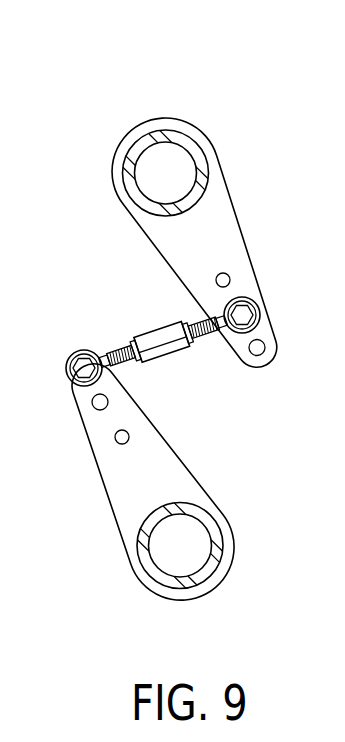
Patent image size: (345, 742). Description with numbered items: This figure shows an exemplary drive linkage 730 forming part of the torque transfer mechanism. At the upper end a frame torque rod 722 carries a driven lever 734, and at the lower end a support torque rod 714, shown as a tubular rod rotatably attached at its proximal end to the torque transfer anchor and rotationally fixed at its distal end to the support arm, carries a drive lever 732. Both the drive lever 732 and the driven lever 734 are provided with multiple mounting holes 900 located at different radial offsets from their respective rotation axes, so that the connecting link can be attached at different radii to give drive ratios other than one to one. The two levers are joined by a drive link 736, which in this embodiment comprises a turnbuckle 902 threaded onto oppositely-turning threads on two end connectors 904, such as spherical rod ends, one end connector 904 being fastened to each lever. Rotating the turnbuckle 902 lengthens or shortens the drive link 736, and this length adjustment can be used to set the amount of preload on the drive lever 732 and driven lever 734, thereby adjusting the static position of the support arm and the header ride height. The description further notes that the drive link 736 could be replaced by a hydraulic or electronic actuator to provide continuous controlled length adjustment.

The drive linkage 730 is at (66, 192).
The frame torque rod 722 is at (135, 147).
The driven lever 734 is at (227, 210).
The mounting holes 900 is at (230, 278).
The end connectors 904 is at (120, 352).
The drive link 736 is at (150, 337).
The turnbuckle 902 is at (190, 343).
The drive lever 732 is at (108, 467).
The support torque rod 714 is at (168, 585).